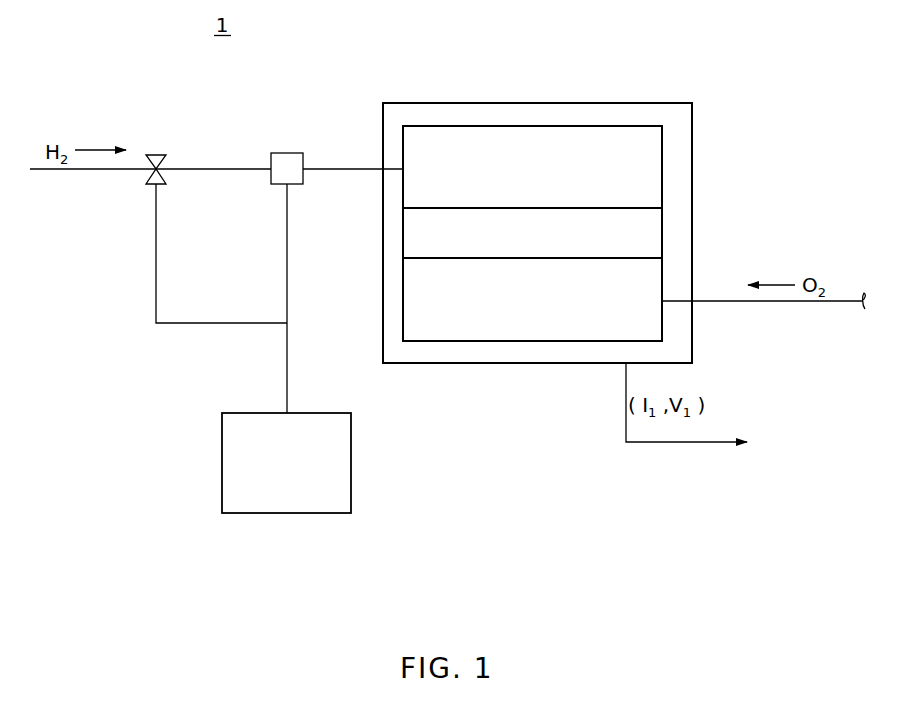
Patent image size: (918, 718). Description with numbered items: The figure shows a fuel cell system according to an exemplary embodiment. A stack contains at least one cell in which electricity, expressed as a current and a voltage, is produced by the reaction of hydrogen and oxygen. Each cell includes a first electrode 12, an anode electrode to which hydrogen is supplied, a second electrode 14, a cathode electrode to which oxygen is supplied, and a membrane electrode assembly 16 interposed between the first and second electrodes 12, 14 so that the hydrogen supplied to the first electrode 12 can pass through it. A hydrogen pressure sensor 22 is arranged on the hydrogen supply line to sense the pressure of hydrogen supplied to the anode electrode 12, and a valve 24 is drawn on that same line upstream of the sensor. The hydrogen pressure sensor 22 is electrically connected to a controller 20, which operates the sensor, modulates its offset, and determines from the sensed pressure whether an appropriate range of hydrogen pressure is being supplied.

The first electrode 12 is at (662, 170).
The second electrode 14 is at (662, 275).
The membrane electrode assembly 16 is at (662, 235).
The controller 20 is at (222, 462).
The hydrogen pressure sensor 22 is at (287, 152).
The valve 24 is at (156, 153).